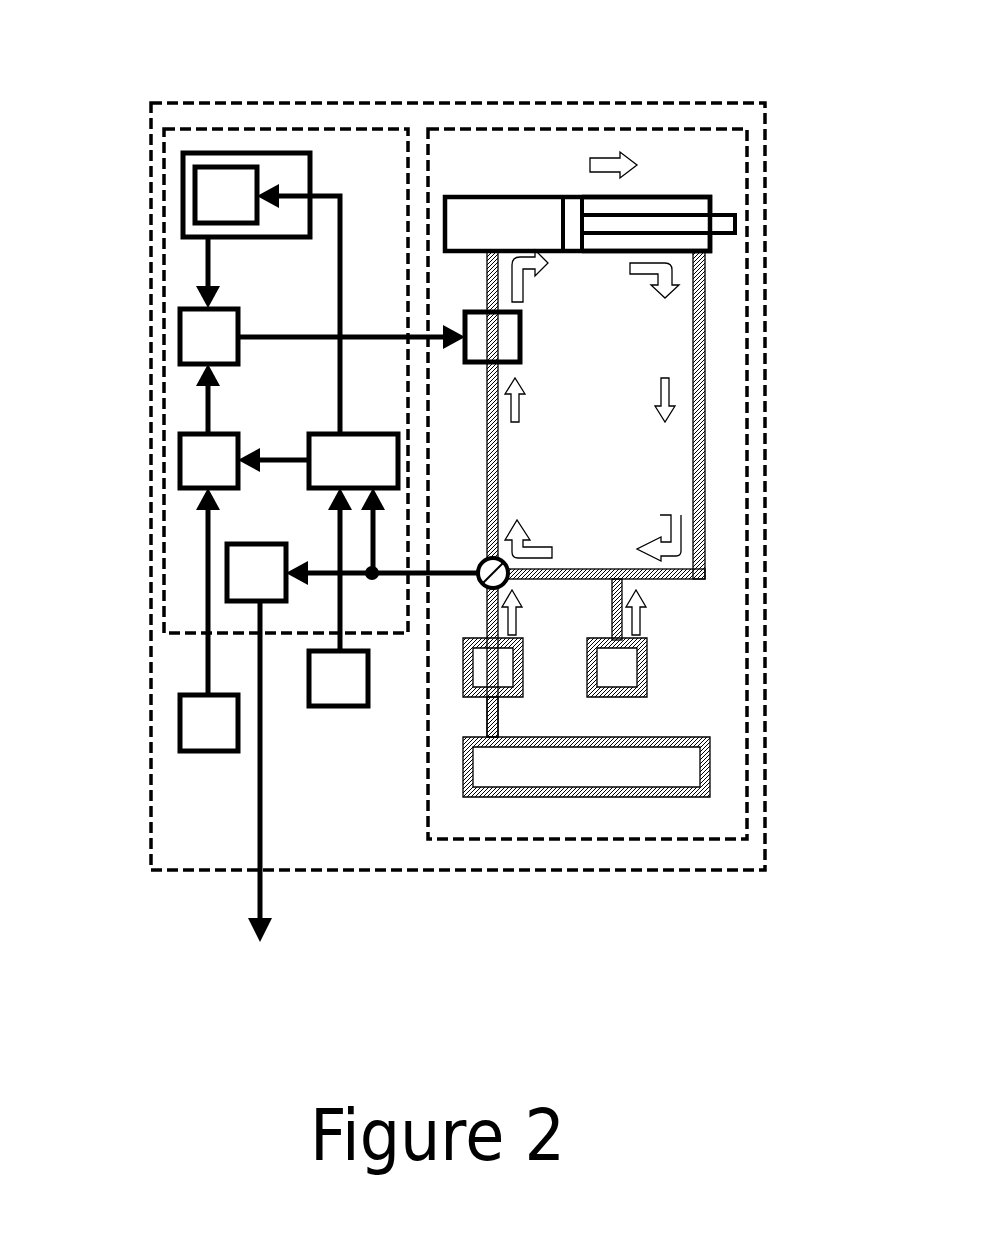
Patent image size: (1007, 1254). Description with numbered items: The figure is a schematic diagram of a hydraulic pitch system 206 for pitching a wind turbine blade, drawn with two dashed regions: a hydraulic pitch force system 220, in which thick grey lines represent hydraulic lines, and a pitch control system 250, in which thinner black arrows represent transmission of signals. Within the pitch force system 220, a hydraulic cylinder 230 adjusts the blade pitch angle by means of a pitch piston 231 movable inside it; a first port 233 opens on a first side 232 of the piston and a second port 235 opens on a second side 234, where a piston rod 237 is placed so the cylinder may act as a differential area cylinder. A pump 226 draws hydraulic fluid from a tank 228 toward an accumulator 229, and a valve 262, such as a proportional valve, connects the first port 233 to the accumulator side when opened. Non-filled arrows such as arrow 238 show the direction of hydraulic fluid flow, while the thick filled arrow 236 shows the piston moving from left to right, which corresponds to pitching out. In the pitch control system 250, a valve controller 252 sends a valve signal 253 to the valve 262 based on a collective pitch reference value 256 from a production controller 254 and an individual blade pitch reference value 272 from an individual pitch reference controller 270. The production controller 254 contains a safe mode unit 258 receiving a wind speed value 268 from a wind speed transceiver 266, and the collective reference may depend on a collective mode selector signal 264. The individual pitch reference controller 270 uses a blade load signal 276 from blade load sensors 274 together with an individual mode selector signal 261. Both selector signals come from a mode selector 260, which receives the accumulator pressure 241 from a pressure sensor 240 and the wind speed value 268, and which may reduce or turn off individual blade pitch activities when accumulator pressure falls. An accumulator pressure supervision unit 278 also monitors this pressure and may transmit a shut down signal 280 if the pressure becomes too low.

The hydraulic pitch system 206 is at (177, 808).
The pitch force system 220 is at (667, 823).
The pump 226 is at (490, 679).
The tank 228 is at (590, 765).
The accumulator 229 is at (630, 670).
The hydraulic cylinder 230 is at (642, 125).
The pitch piston 231 is at (572, 212).
The first side 232 is at (517, 210).
The first port 233 is at (494, 232).
The second side 234 is at (673, 205).
The second port 235 is at (716, 260).
The thick filled arrow 236 is at (607, 155).
The piston rod 237 is at (717, 223).
The arrow 238 is at (668, 535).
The pressure sensor 240 is at (500, 566).
The accumulator pressure 241 is at (442, 577).
The pitch control system 250 is at (183, 518).
The valve controller 252 is at (194, 332).
The valve signal 253 is at (382, 337).
The production controller 254 is at (270, 165).
The collective pitch reference value 256 is at (204, 266).
The safe mode unit 258 is at (222, 186).
The mode selector 260 is at (366, 468).
The individual mode selector signal 261 is at (293, 465).
The valve 262 is at (510, 328).
The collective mode selector signal 264 is at (317, 196).
The wind speed transceiver 266 is at (335, 673).
The wind speed value 268 is at (335, 524).
The individual pitch reference controller 270 is at (194, 469).
The individual blade pitch reference value 272 is at (206, 420).
The blade load sensors 274 is at (190, 730).
The blade load signal 276 is at (207, 560).
The accumulator pressure supervision unit 278 is at (250, 589).
The shut down signal 280 is at (255, 897).